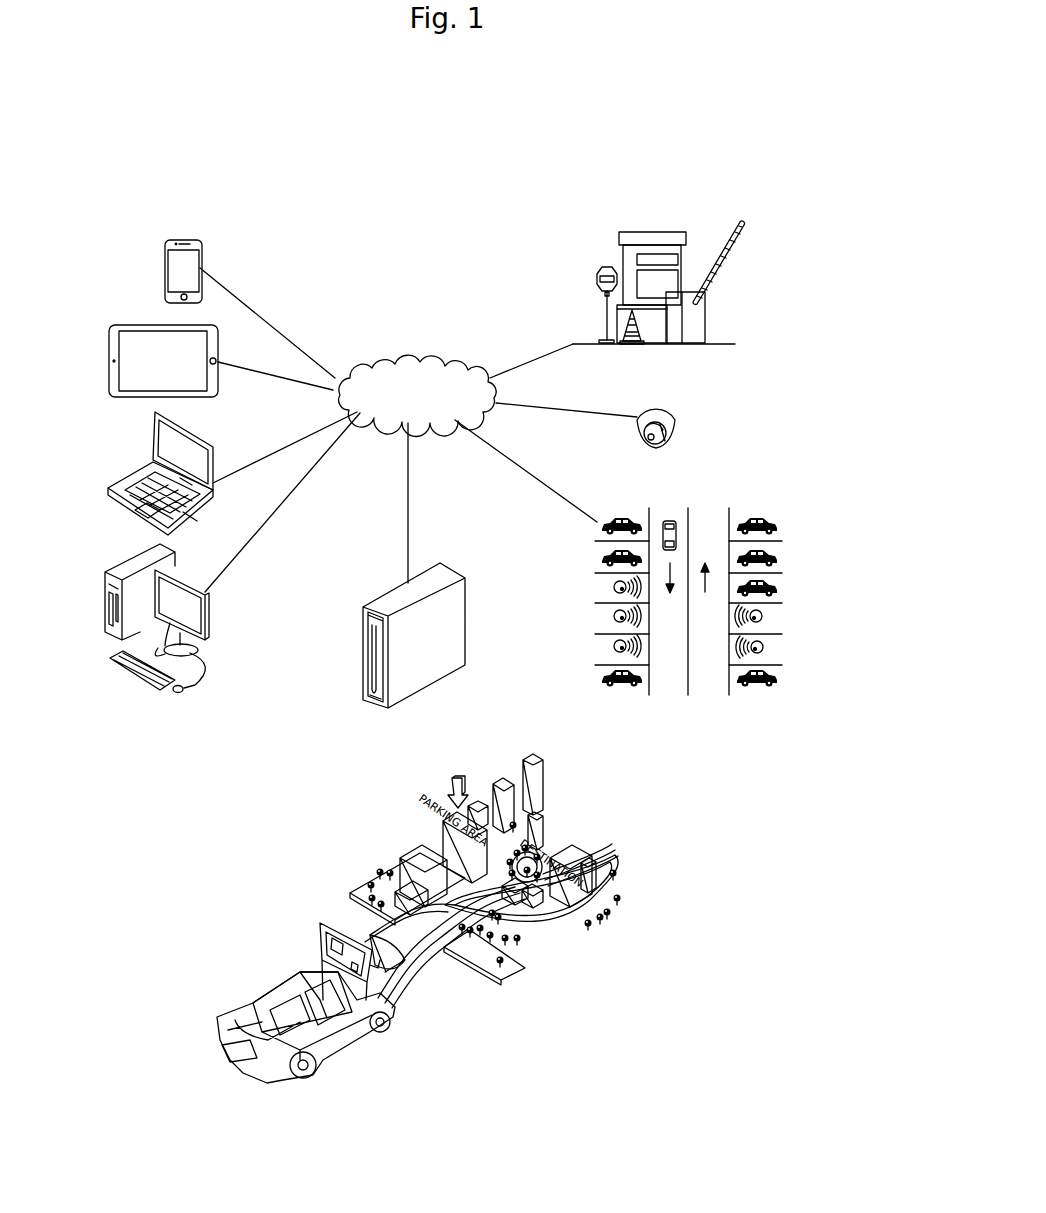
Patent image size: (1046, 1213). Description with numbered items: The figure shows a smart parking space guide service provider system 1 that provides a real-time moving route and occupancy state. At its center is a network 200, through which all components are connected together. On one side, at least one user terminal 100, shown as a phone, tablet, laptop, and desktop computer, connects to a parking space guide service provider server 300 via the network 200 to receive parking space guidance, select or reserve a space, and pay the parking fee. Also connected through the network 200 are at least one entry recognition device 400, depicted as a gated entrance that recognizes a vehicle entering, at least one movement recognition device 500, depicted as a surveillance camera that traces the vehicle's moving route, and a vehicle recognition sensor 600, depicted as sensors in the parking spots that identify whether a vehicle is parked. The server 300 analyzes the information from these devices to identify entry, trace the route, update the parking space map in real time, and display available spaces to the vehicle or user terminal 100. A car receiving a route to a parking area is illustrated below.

The smart parking space guide service provider system 1 is at (660, 135).
The user terminal 100 is at (97, 250).
The network 200 is at (425, 366).
The parking space guide service provider server 300 is at (428, 676).
The entry recognition device 400 is at (659, 237).
The movement recognition device 500 is at (667, 418).
The vehicle recognition sensor 600 is at (775, 615).